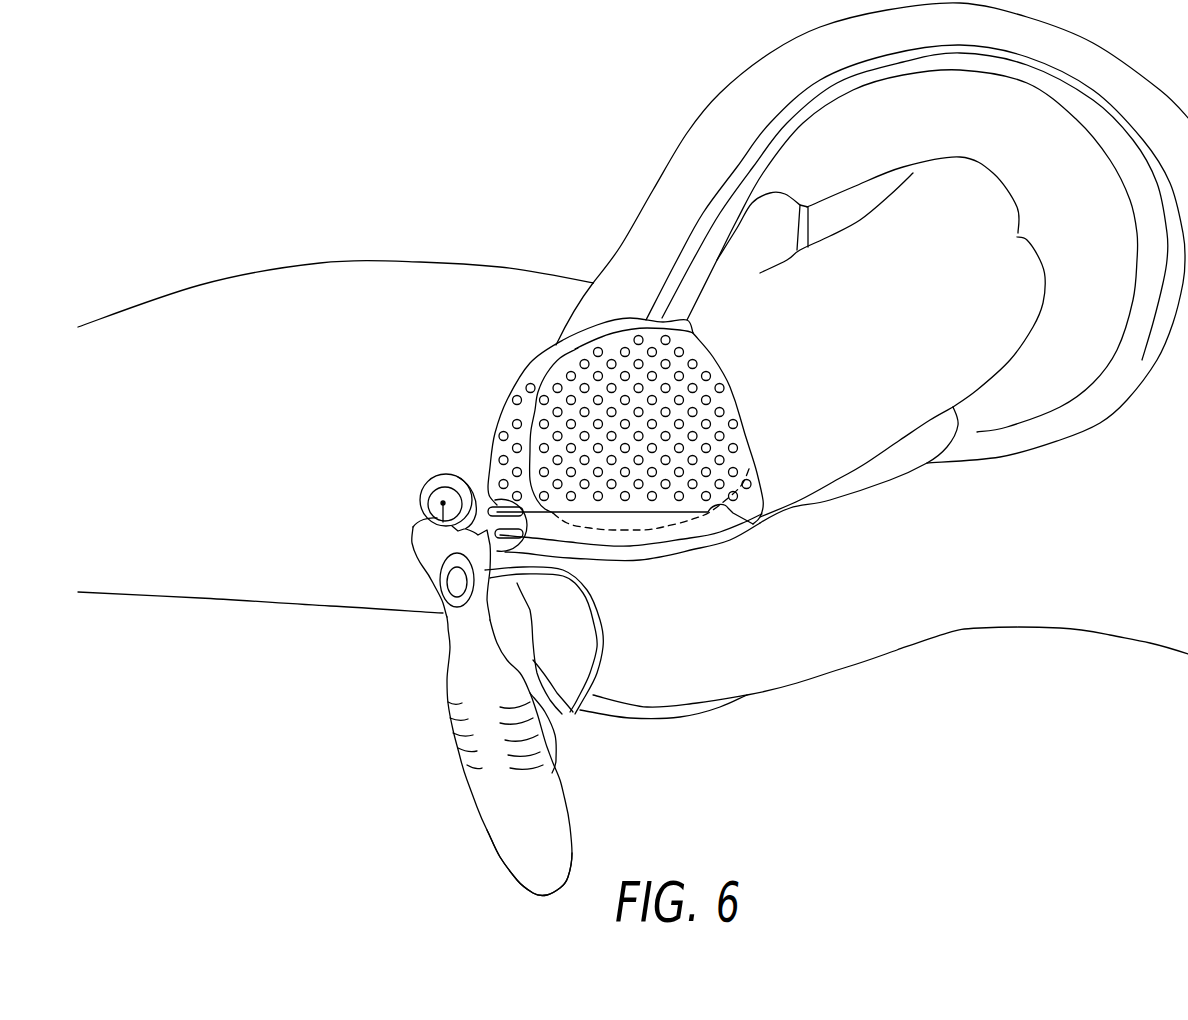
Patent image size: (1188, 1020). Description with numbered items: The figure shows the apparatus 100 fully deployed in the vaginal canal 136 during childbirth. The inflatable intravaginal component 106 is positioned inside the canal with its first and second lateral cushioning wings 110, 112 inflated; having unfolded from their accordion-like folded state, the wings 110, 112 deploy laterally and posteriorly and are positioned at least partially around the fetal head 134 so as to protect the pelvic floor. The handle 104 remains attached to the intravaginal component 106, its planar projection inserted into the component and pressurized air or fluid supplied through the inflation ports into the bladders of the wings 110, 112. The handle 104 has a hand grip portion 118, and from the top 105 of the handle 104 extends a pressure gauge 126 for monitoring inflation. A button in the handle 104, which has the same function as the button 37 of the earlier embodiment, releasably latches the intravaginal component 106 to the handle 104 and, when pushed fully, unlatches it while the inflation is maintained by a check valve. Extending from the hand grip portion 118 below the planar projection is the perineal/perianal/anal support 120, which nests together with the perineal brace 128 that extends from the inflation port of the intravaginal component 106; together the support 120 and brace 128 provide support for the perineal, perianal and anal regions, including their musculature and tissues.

The apparatus 100 is at (591, 550).
The intravaginal component 106 is at (629, 385).
The first lateral cushioning wing 110 is at (528, 362).
The fetal head 134 is at (575, 353).
The vaginal canal 136 is at (658, 299).
The second lateral cushioning wing 112 is at (754, 428).
The pressure gauge 126 is at (427, 471).
The top of the handle 105 is at (412, 530).
The button 37 is at (442, 577).
The handle 104 is at (438, 680).
The hand grip portion 118 is at (505, 815).
The perineal brace 128 is at (590, 591).
The perineal/perianal/anal support 120 is at (575, 710).